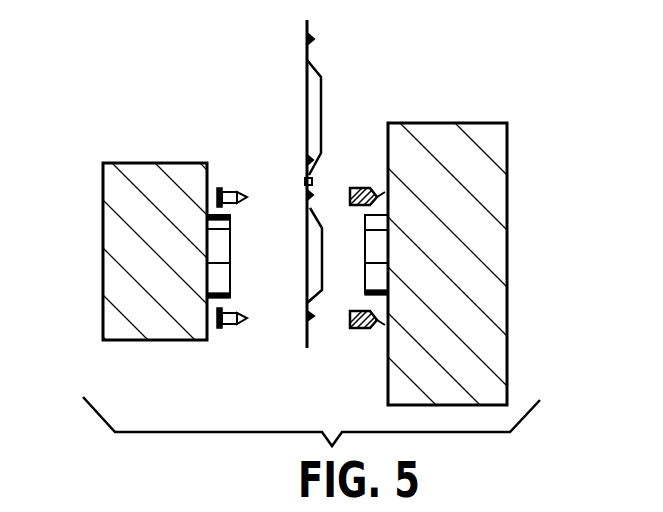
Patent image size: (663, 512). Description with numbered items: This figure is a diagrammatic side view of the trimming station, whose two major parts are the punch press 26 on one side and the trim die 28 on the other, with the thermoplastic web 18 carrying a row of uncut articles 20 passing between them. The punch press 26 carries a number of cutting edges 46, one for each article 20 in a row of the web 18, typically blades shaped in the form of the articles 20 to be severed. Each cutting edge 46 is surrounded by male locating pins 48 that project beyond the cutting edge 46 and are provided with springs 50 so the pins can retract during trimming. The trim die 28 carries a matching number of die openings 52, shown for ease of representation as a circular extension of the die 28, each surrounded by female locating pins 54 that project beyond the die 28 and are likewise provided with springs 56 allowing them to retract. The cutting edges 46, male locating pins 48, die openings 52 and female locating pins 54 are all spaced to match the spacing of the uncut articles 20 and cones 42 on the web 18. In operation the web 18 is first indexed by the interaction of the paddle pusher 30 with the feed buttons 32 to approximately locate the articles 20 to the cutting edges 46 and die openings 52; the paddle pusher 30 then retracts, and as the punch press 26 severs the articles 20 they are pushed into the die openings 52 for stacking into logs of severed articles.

The web 18 is at (306, 340).
The articles 20 is at (322, 85).
The punch press 26 is at (103, 275).
The trim die 28 is at (507, 290).
The paddle pusher 30 is at (313, 180).
The feed buttons 32 is at (305, 182).
The cones 42 is at (313, 38).
The cutting edges 46 is at (231, 252).
The male locating pins 48 is at (225, 190).
The springs 50 is at (208, 192).
The die openings 52 is at (365, 282).
The female locating pins 54 is at (383, 205).
The springs 56 is at (382, 198).